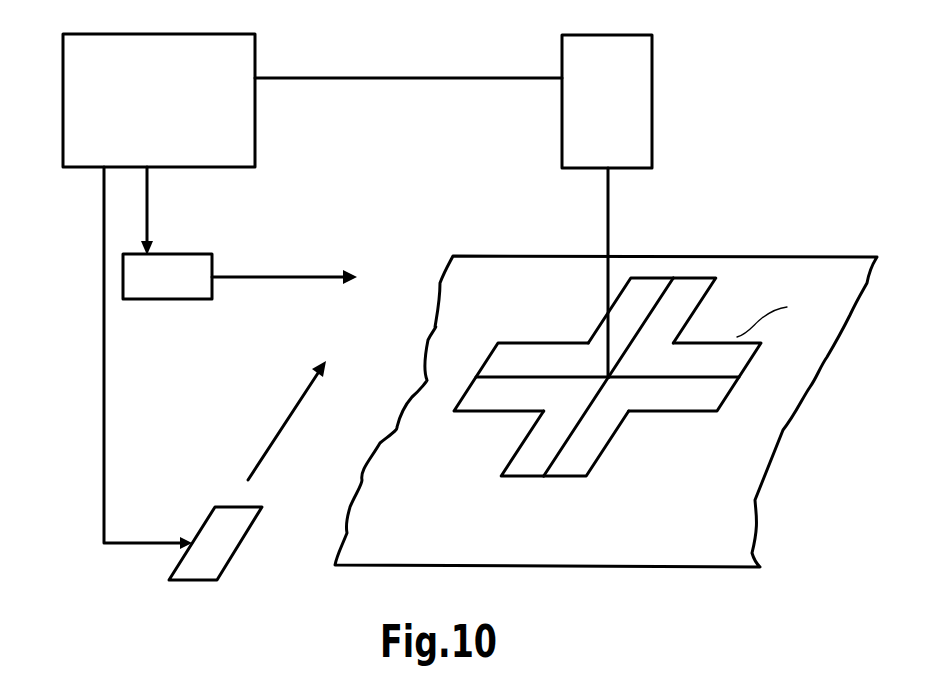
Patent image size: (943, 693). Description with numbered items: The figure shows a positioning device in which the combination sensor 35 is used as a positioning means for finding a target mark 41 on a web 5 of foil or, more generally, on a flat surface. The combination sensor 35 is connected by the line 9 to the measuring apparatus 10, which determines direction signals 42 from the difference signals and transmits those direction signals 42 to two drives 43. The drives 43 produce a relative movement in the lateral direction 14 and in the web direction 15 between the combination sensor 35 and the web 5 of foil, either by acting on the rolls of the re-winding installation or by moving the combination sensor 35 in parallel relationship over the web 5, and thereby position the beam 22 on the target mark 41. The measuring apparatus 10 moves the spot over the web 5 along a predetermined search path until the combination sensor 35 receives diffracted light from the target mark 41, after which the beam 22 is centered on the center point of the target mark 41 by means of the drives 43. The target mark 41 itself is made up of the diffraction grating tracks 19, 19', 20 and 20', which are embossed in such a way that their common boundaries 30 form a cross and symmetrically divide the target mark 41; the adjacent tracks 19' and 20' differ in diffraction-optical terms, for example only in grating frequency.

The web of foil 5 is at (688, 550).
The line 9 is at (412, 80).
The measuring apparatus 10 is at (232, 53).
The lateral direction 14 is at (292, 413).
The web direction 15 is at (302, 275).
The first diffraction grating track 19 is at (581, 409).
The diffraction grating track 19' is at (630, 409).
The second diffraction grating track 20 is at (494, 364).
The diffraction grating track 20' is at (690, 303).
The beam 22 is at (608, 213).
The common boundary 30 is at (622, 352).
The combination sensor 35 is at (633, 82).
The target mark 41 is at (777, 316).
The direction signals 42 is at (104, 207).
The drives 43 is at (214, 520).